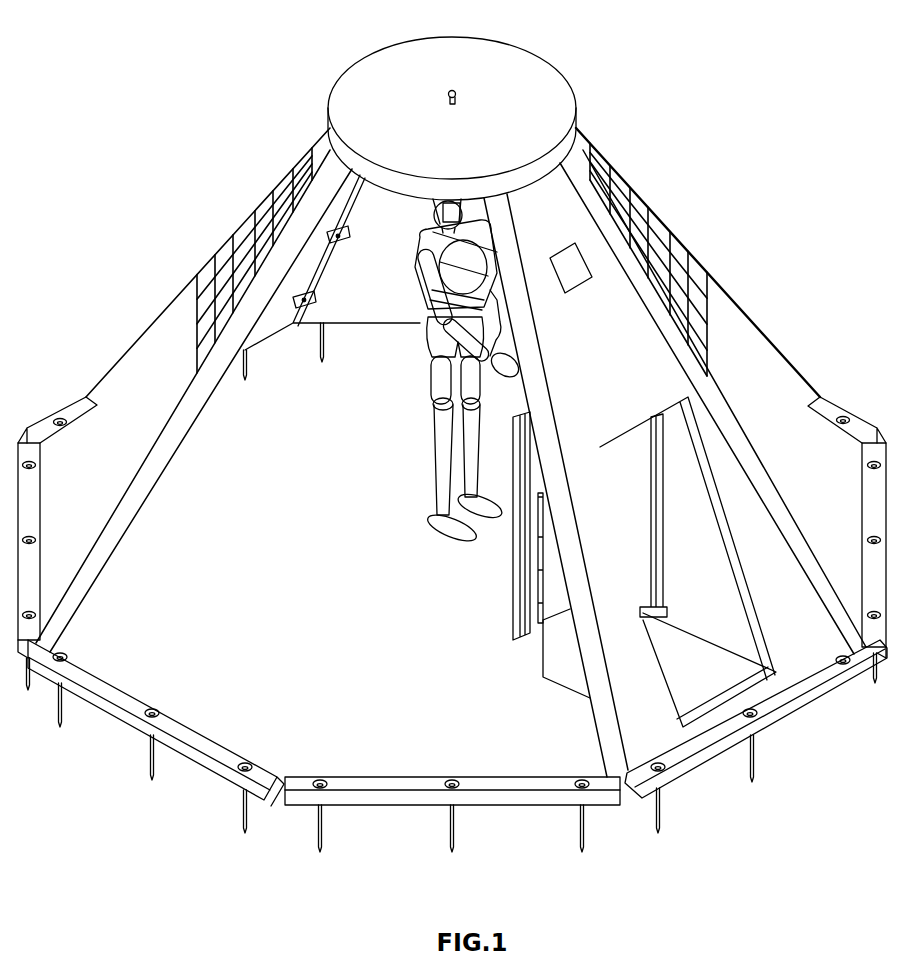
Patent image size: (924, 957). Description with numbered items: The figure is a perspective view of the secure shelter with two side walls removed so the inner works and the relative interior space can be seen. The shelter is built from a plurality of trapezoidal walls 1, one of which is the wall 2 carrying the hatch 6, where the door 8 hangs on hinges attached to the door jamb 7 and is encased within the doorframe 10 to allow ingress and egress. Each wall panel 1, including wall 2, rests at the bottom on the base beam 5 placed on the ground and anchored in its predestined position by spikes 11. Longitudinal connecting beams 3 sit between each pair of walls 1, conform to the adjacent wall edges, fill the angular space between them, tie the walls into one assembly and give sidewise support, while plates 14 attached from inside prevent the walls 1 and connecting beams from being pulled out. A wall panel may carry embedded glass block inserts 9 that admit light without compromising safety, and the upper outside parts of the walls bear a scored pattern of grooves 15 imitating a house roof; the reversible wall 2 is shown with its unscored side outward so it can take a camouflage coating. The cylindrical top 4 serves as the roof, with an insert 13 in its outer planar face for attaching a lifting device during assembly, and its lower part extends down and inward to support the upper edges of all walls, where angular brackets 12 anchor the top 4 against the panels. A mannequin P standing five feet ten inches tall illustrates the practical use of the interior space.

The trapezoidal wall 1 is at (807, 487).
The wall with hatch 2 is at (605, 333).
The longitudinal connecting beam 3 is at (702, 557).
The cylindrical top 4 is at (513, 147).
The base beam 5 is at (373, 788).
The hatch 6 is at (725, 427).
The door jamb 7 is at (665, 527).
The door 8 is at (615, 470).
The glass block insert 9 is at (572, 263).
The doorframe 10 is at (518, 558).
The spike 11 is at (582, 843).
The angular bracket 12 is at (447, 213).
The insert 13 is at (453, 93).
The plate 14 is at (337, 228).
The scored pattern of grooves 15 is at (231, 278).
The mannequin P is at (433, 250).